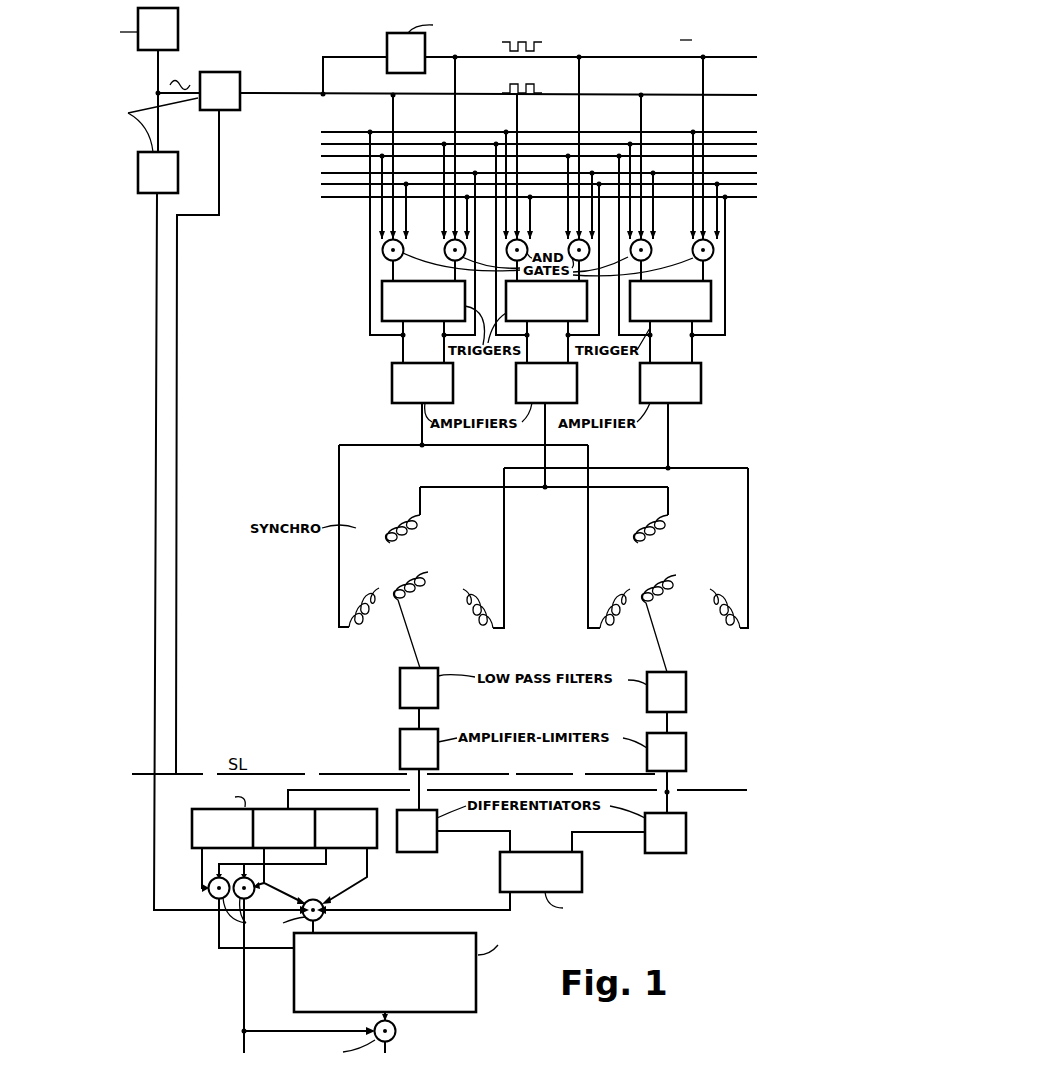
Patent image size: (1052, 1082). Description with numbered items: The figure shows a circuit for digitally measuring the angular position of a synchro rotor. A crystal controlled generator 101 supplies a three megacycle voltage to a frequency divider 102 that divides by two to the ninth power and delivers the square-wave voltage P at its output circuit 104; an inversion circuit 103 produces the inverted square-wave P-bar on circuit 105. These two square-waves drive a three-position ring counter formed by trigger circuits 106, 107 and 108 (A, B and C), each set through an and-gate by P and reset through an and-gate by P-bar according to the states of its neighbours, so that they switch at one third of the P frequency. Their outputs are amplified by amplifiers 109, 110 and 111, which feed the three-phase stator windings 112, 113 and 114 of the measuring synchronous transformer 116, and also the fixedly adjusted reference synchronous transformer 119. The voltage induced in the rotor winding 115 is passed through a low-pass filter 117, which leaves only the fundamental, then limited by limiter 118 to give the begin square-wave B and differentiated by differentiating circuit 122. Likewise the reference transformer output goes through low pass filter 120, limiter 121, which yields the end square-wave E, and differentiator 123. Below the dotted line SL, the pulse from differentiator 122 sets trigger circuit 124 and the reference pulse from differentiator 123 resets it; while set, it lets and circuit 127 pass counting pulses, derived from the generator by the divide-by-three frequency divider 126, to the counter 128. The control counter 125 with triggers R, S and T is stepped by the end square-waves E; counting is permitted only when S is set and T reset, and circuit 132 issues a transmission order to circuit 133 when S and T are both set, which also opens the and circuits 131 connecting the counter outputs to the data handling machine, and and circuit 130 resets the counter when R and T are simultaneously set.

The crystal controlled generator 101 is at (122, 80).
The frequency divider 102 is at (140, 413).
The inversion circuit 103 is at (415, 55).
The output circuit 104 is at (498, 157).
The circuit 105 is at (591, 138).
The trigger circuit 106 is at (423, 322).
The trigger circuit 107 is at (546, 322).
The trigger circuit 108 is at (670, 322).
The amplifier 109 is at (422, 404).
The amplifier 110 is at (546, 425).
The amplifier 111 is at (670, 415).
The stator winding 112 is at (366, 620).
The stator winding 113 is at (397, 529).
The stator winding 114 is at (475, 620).
The rotor winding 115 is at (427, 620).
The synchronous transformer 116 is at (547, 574).
The low-pass filter 117 is at (432, 698).
The limiter 118 is at (427, 769).
The synchronous transformer 119 is at (687, 593).
The low pass filter 120 is at (666, 702).
The limiter 121 is at (673, 773).
The differentiating circuit 122 is at (453, 845).
The differentiator 123 is at (629, 847).
The trigger circuit 124 is at (473, 884).
The control counter 125 is at (287, 841).
The frequency divider 126 is at (223, 523).
The and circuit 127 is at (333, 917).
The counter 128 is at (433, 975).
The and circuit 130 is at (233, 913).
The and circuits 131 is at (366, 1047).
The and circuit 132 is at (279, 876).
The circuit 133 is at (309, 975).